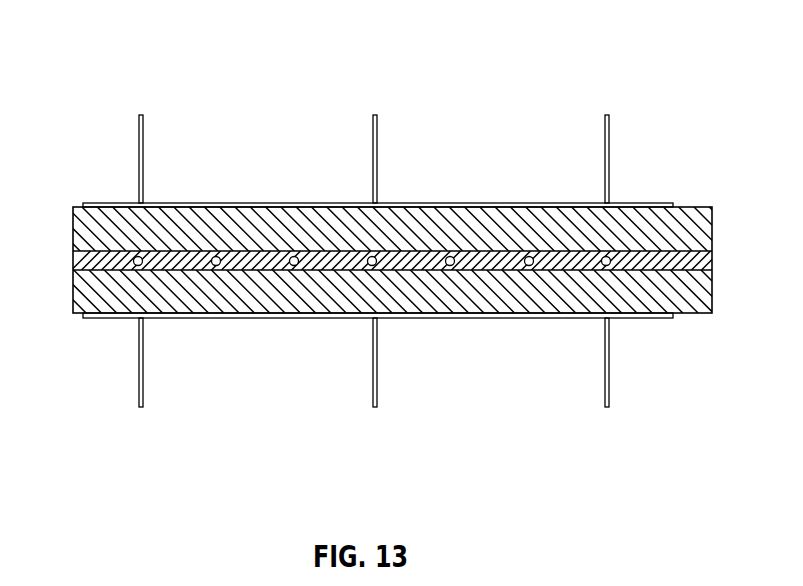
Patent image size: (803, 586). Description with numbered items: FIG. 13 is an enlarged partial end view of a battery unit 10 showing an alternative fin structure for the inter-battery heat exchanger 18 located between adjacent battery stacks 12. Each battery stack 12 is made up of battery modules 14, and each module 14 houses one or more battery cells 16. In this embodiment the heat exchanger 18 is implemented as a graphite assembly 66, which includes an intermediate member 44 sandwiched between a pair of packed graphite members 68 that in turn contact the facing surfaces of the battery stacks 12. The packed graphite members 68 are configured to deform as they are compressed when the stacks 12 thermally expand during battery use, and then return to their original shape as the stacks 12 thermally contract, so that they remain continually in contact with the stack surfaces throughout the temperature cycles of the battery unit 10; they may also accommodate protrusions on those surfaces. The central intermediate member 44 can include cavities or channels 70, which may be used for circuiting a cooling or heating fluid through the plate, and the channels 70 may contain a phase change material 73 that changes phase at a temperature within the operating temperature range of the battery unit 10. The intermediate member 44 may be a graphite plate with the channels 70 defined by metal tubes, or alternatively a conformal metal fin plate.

The battery unit 10 is at (653, 120).
The battery stack 12 is at (73, 115).
The battery module 14 is at (328, 135).
The battery cell 16 is at (265, 168).
The heat exchanger 18 is at (68, 210).
The intermediate member 44 is at (415, 262).
The graphite assembly 66 is at (718, 207).
The packed graphite member 68 is at (687, 226).
The channel 70 is at (528, 261).
The phase change material 73 is at (530, 258).